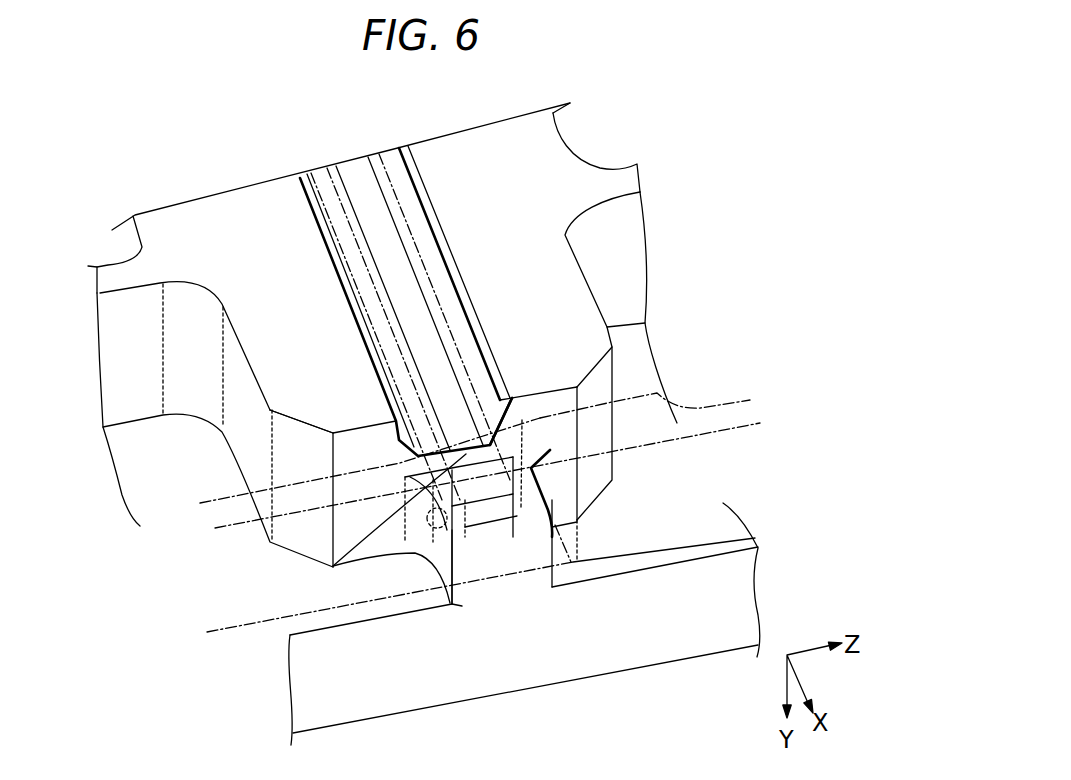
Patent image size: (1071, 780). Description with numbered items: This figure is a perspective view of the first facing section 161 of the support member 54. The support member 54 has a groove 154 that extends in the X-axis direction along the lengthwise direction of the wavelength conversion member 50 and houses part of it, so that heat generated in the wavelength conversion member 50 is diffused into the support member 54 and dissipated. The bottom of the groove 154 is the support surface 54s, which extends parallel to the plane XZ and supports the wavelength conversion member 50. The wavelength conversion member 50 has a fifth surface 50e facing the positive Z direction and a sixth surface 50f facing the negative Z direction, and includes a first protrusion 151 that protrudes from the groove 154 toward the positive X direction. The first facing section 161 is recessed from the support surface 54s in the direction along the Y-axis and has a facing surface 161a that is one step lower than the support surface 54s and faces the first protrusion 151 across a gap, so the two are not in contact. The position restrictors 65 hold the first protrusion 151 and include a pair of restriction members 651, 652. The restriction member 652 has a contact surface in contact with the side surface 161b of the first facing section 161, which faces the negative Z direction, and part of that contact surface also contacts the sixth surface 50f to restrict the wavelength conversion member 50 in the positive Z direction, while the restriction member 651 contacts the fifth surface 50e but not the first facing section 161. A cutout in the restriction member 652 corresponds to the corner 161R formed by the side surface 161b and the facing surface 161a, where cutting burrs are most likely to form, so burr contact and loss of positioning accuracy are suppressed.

The wavelength conversion member 50 is at (363, 238).
The support member 54 is at (524, 162).
The support surface 54s is at (408, 293).
The groove 154 is at (393, 168).
The sixth surface 50f is at (389, 442).
The fifth surface 50e is at (522, 420).
The restriction member 652 is at (351, 472).
The restriction member 651 is at (637, 410).
The position restrictors 65 is at (487, 475).
The first facing section 161 is at (497, 591).
The facing surface 161a is at (525, 490).
The corner 161R is at (333, 565).
The side surface 161b is at (447, 573).
The first protrusion 151 is at (508, 541).